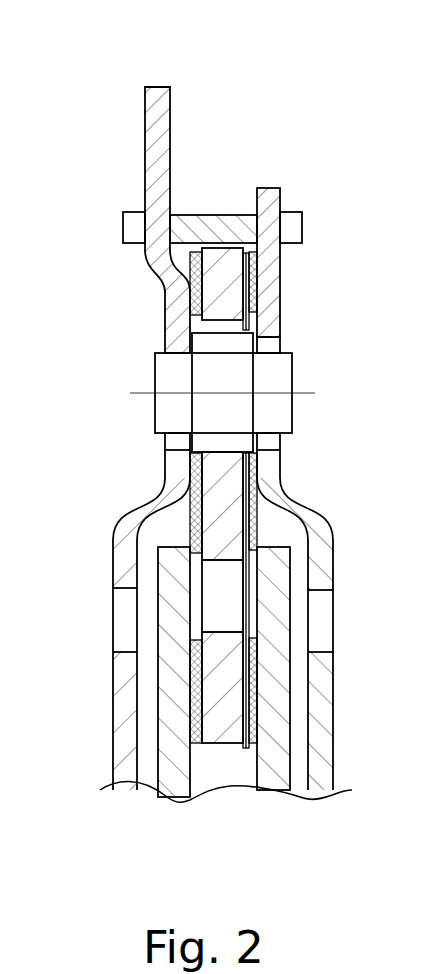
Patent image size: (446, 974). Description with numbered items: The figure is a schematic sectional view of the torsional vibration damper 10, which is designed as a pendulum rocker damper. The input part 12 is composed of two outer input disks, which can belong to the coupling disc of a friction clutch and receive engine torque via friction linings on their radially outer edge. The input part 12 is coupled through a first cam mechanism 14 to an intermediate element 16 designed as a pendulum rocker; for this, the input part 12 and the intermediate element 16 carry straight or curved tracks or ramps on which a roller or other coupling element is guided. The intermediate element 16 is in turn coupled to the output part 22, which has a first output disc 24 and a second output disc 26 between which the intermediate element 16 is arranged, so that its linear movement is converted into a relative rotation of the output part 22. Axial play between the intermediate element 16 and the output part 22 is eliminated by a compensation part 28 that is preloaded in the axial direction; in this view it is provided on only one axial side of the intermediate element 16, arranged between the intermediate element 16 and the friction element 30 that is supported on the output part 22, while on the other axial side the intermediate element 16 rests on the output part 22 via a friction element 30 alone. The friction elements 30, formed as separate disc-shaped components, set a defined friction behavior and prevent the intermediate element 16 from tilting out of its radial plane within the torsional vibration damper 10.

The torsional vibration damper 10 is at (108, 108).
The input part 12 is at (263, 203).
The first cam mechanism 14 is at (218, 382).
The intermediate element 16 is at (223, 670).
The output part 22 is at (275, 880).
The first output disc 24 is at (177, 768).
The second output disc 26 is at (275, 762).
The compensation part 28 is at (247, 635).
The friction element 30 is at (187, 478).